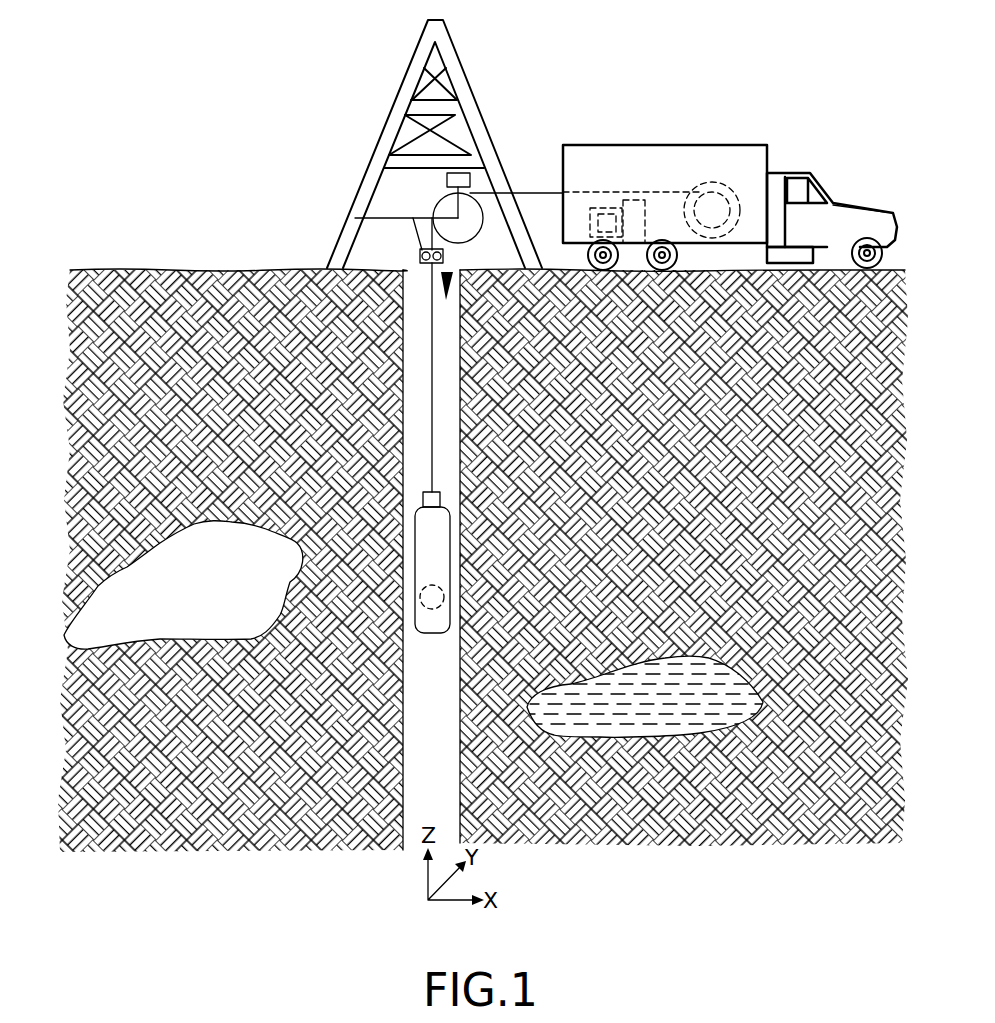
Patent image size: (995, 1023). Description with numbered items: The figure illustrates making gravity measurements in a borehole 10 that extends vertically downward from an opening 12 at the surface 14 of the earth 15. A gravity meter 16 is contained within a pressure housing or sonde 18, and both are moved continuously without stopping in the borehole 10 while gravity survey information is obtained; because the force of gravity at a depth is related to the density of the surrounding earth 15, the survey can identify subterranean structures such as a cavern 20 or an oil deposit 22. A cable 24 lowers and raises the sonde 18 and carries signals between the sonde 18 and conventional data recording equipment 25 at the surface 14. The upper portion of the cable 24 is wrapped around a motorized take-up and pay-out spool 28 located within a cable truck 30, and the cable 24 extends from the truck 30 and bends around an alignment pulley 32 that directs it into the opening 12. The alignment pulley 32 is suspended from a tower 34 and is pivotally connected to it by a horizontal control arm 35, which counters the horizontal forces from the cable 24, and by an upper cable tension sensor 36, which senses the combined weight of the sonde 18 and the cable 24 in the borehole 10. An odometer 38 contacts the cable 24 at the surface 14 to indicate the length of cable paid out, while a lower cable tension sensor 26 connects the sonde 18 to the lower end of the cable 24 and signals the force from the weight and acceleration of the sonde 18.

The borehole 10 is at (446, 744).
The opening 12 is at (450, 271).
The surface 14 is at (262, 268).
The earth 15 is at (878, 346).
The gravity meter 16 is at (432, 610).
The sonde 18 is at (445, 549).
The cavern 20 is at (210, 598).
The oil deposit 22 is at (763, 703).
The cable 24 is at (433, 334).
The data recording equipment 25 is at (640, 206).
The lower cable tension sensor 26 is at (434, 491).
The motorized take-up and pay-out spool 28 is at (707, 182).
The cable truck 30 is at (780, 173).
The alignment pulley 32 is at (438, 206).
The tower 34 is at (452, 54).
The control arm 35 is at (368, 217).
The upper cable tension sensor 36 is at (471, 179).
The odometer 38 is at (420, 256).